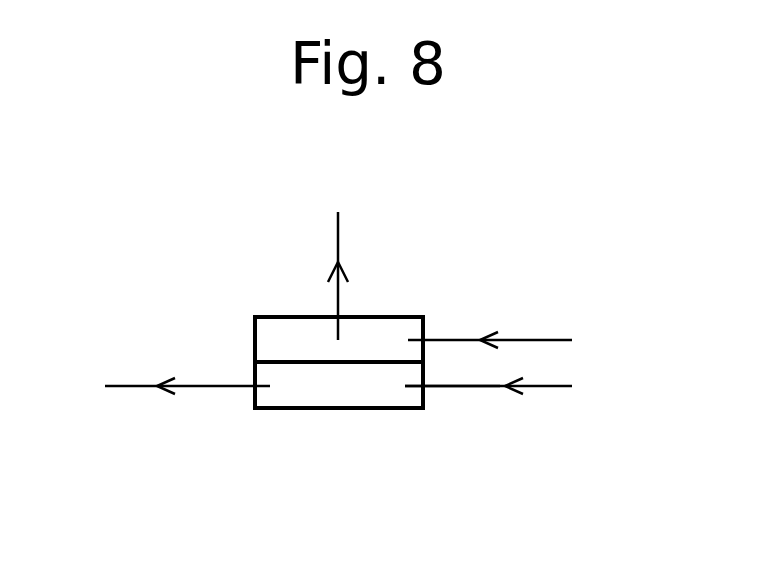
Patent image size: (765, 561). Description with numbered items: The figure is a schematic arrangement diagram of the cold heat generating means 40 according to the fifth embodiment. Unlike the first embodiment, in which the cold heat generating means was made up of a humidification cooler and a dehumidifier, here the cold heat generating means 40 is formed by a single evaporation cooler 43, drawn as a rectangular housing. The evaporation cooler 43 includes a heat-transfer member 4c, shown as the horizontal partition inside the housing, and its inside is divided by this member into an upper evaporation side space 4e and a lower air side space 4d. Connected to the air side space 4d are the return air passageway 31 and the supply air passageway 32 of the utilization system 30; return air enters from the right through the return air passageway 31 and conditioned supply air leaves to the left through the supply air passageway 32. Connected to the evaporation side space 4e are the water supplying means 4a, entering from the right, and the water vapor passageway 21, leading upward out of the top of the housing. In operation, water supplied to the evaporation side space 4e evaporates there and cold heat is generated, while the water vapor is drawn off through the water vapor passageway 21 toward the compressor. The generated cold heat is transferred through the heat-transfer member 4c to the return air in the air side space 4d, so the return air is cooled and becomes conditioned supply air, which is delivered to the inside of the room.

The cold heat generating means 40 is at (158, 258).
The water vapor passageway 21 is at (340, 235).
The evaporation side space 4e is at (298, 325).
The evaporation cooler 43 is at (408, 318).
The water supplying means 4a is at (539, 340).
The heat-transfer member 4c is at (295, 362).
The air side space 4d is at (330, 400).
The supply air passageway 32 is at (205, 386).
The utilization system 30 is at (462, 399).
The return air passageway 31 is at (547, 386).